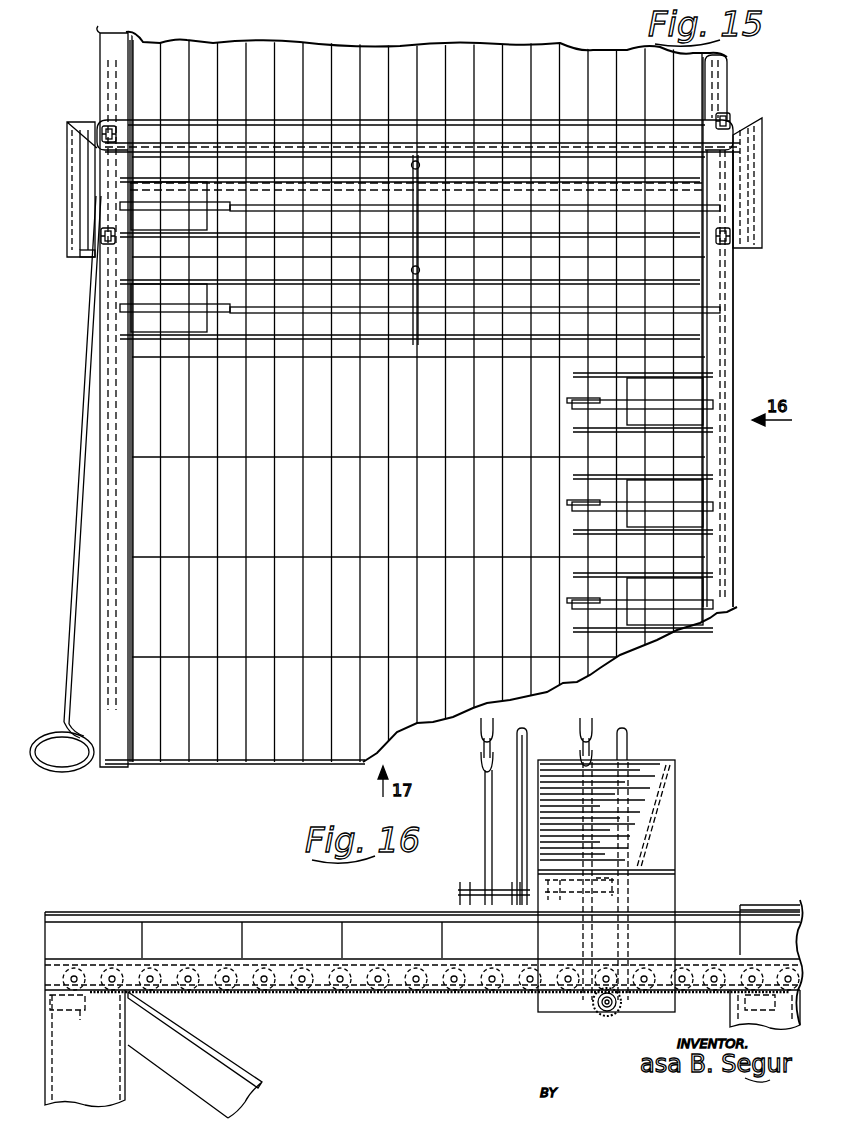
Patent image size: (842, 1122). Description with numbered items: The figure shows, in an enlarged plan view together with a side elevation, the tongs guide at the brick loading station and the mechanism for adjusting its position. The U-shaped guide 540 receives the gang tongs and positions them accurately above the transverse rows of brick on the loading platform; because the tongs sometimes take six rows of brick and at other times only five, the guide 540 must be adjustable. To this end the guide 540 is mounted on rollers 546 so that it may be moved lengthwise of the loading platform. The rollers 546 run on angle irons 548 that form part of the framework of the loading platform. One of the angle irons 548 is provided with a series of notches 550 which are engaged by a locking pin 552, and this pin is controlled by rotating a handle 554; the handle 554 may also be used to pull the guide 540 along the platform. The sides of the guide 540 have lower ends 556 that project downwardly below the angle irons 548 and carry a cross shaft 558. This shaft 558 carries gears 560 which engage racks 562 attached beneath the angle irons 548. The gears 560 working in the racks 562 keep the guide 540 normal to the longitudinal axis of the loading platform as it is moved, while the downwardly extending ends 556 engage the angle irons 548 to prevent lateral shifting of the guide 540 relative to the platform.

In FIG. 15, the U-shaped guide 540 is at (418, 136).
In FIG. 15, the rollers 546 is at (106, 128).
In FIG. 15, the angle irons 548 is at (106, 46).
In FIG. 16, the angle irons 548 is at (335, 992).
In FIG. 15, the notches 550 is at (107, 505).
In FIG. 15, the locking pin 552 is at (100, 212).
In FIG. 15, the handle 554 is at (62, 766).
In FIG. 16, the lower ends 556 is at (552, 1003).
In FIG. 16, the cross shaft 558 is at (604, 1008).
In FIG. 16, the gears 560 is at (616, 1013).
In FIG. 15, the racks 562 is at (727, 515).
In FIG. 16, the racks 562 is at (188, 992).